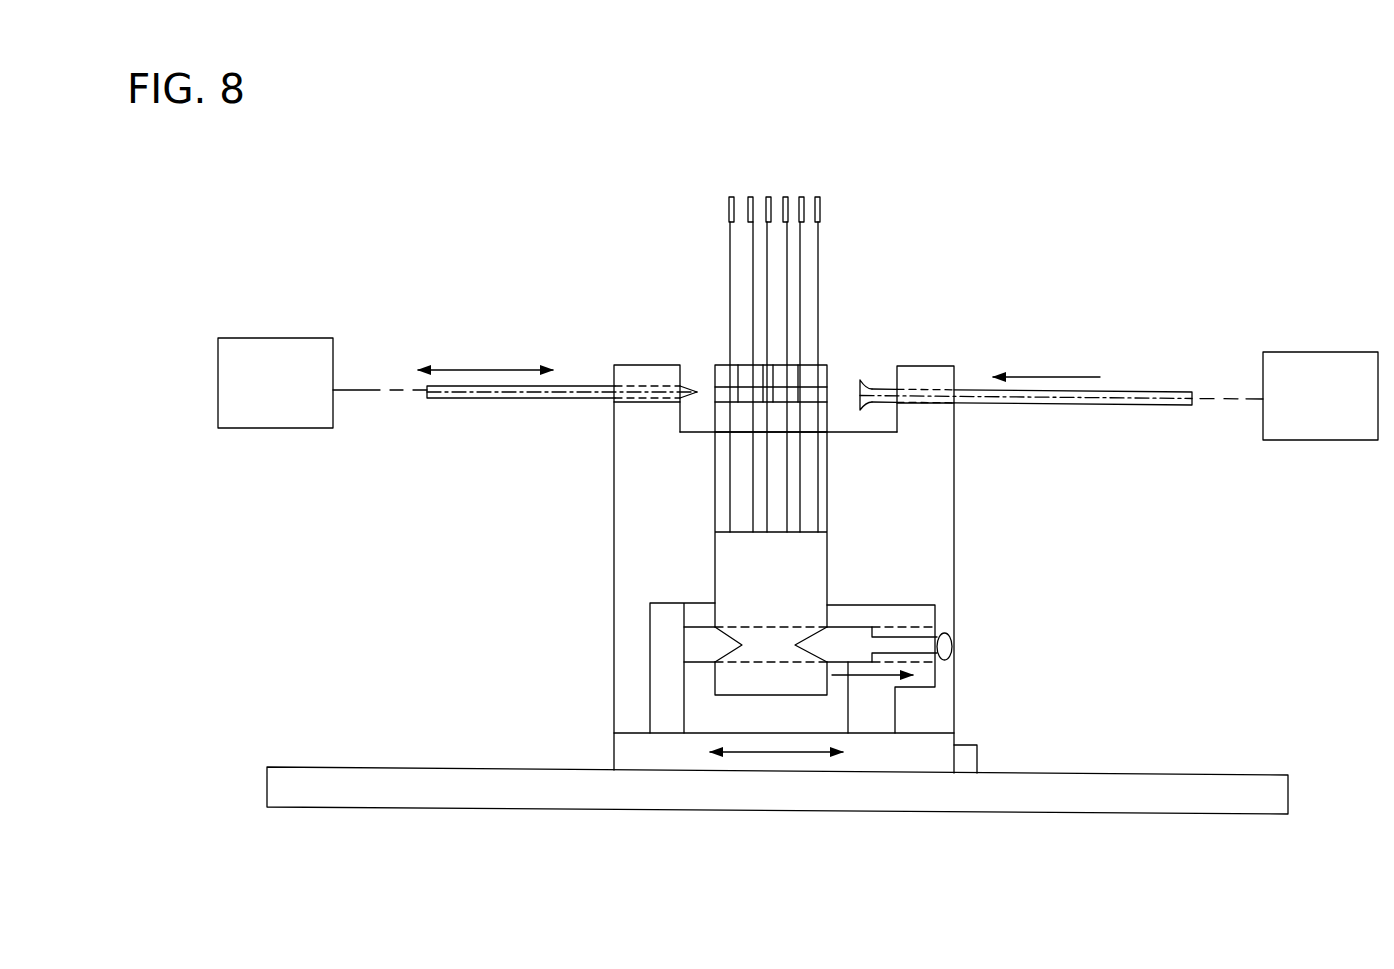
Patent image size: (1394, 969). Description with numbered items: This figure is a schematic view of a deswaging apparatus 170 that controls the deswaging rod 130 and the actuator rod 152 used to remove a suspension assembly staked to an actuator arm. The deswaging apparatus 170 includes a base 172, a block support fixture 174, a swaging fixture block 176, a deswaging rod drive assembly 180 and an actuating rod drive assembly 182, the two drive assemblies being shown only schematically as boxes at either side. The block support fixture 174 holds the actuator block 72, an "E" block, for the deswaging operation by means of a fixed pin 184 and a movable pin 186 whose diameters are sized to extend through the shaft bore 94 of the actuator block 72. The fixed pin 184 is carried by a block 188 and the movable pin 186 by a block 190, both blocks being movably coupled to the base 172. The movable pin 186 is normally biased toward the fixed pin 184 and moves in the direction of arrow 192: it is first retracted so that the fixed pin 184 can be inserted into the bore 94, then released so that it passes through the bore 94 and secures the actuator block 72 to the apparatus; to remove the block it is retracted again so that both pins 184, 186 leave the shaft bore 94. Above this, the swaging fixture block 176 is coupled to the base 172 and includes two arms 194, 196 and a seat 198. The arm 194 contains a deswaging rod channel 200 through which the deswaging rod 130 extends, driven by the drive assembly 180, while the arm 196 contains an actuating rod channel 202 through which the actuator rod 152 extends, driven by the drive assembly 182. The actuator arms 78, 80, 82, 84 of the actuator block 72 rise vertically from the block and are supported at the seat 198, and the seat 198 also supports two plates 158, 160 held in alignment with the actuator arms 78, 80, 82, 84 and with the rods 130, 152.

The actuator block 72 is at (827, 578).
The actuator arm 78 is at (805, 432).
The actuator arm 80 is at (768, 364).
The actuator arm 82 is at (785, 364).
The actuator arm 84 is at (809, 364).
The shaft bore 94 is at (780, 627).
The deswaging rod 130 is at (1123, 390).
The actuator rod 152 is at (579, 382).
The plate 158 is at (777, 365).
The plate 160 is at (745, 365).
The deswaging apparatus 170 is at (1093, 287).
The base 172 is at (1135, 773).
The block support fixture 174 is at (927, 618).
The swaging fixture block 176 is at (960, 458).
The deswaging rod drive assembly 180 is at (1298, 352).
The actuating rod drive assembly 182 is at (257, 337).
The fixed pin 184 is at (698, 638).
The movable pin 186 is at (867, 648).
The block 188 is at (663, 689).
The block 190 is at (873, 713).
The arrow 192 is at (857, 677).
The arm 194 is at (932, 363).
The arm 196 is at (651, 362).
The seat 198 is at (848, 434).
The deswaging rod channel 200 is at (957, 373).
The actuating rod channel 202 is at (652, 402).